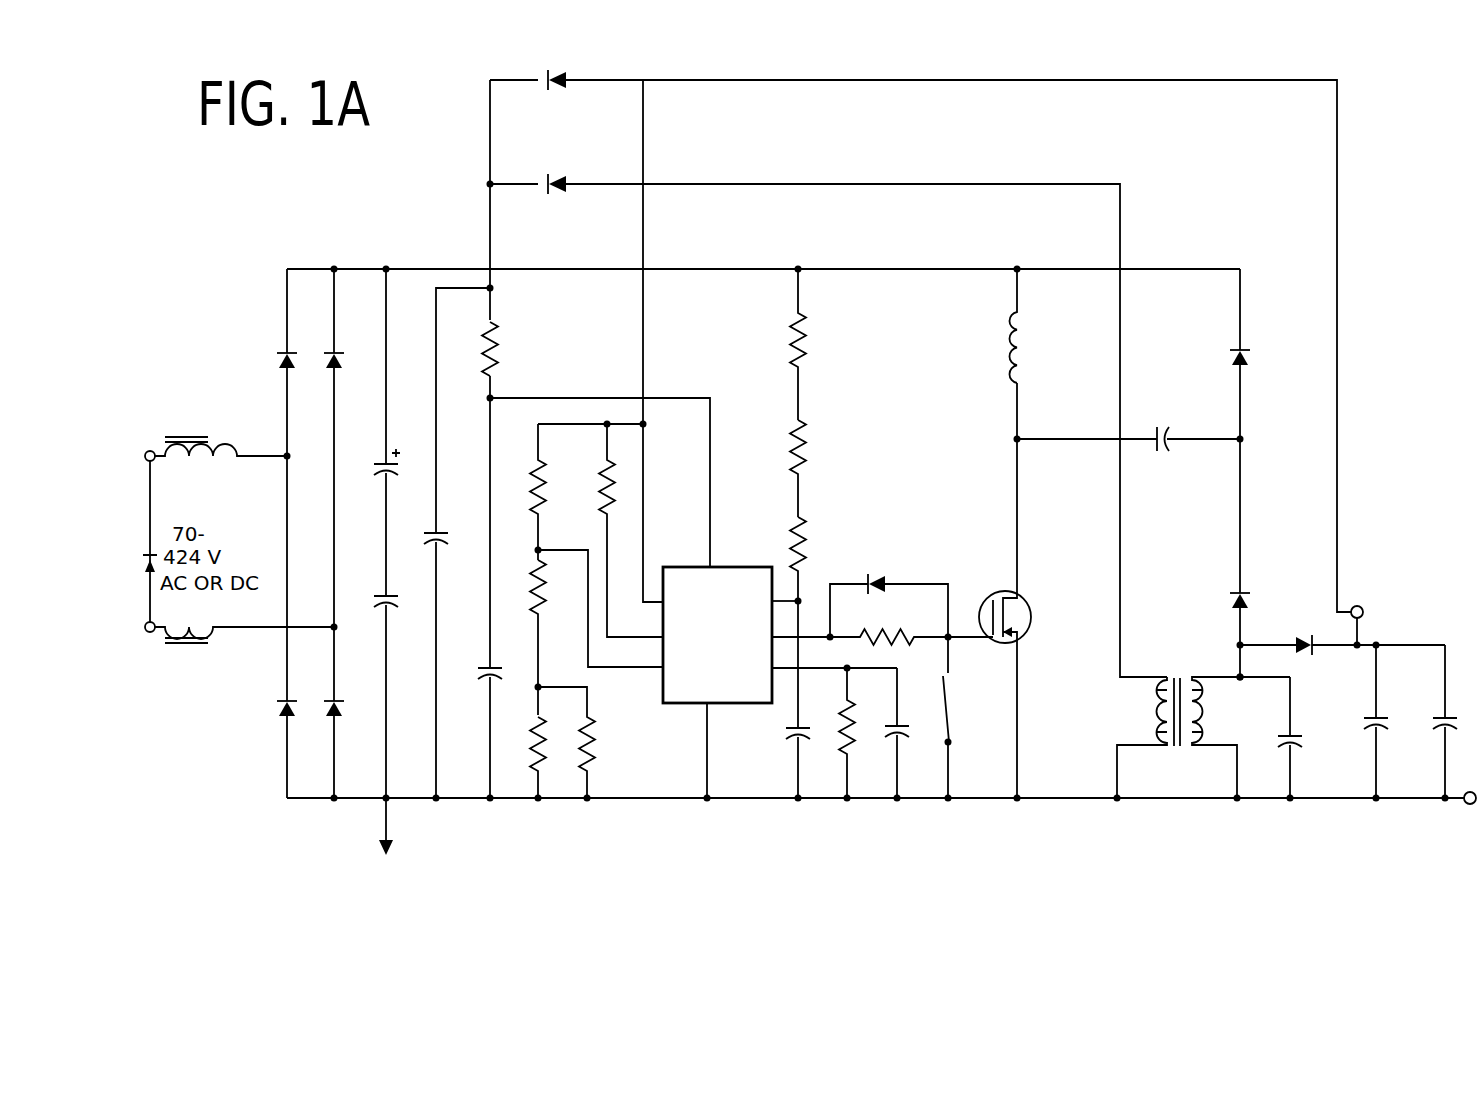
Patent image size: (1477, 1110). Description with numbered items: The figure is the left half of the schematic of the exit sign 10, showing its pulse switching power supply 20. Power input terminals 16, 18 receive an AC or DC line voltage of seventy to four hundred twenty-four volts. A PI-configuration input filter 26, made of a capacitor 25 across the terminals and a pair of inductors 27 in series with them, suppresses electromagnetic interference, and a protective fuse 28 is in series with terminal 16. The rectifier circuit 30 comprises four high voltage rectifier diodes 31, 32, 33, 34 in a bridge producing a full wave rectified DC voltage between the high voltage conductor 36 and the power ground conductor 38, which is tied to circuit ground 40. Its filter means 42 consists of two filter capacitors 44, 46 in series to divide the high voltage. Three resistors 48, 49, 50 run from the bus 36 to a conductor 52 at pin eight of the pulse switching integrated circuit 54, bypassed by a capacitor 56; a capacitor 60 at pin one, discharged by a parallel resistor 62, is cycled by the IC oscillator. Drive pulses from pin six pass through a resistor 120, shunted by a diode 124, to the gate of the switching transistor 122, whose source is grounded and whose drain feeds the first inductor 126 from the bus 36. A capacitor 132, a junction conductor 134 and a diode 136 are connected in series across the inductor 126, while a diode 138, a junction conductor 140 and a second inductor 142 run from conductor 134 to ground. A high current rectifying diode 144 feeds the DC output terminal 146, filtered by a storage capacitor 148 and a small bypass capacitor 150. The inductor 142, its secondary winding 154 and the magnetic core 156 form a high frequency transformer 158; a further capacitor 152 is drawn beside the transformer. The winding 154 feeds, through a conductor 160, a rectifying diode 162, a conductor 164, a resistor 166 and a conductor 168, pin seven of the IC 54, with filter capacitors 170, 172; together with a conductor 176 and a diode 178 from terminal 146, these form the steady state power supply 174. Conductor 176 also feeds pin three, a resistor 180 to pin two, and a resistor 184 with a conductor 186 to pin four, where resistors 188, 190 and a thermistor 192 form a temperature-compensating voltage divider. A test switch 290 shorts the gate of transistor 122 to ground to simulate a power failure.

The exit sign 10 is at (438, 137).
The power input terminal 16 is at (215, 507).
The power input terminal 18 is at (239, 649).
The power supply 20 is at (893, 231).
The capacitor 25 is at (169, 519).
The PI-configuration input filter 26 is at (209, 415).
The inductors 27 is at (212, 542).
The protective fuse 28 is at (228, 484).
The rectifier circuit 30 is at (311, 502).
The rectifier diode 31 is at (259, 368).
The rectifier diode 32 is at (349, 384).
The rectifier diode 33 is at (248, 721).
The rectifier diode 34 is at (347, 735).
The high voltage DC conductor 36 is at (763, 237).
The power ground conductor 38 is at (881, 818).
The power ground 40 is at (414, 825).
The filter means 42 is at (404, 533).
The filter capacitor 44 is at (373, 485).
The filter capacitor 46 is at (371, 579).
The resistor 48 is at (827, 344).
The resistor 49 is at (835, 456).
The resistor 50 is at (824, 611).
The conductor 52 is at (821, 566).
The pulse switching integrated circuit 54 is at (717, 670).
The bypass capacitor 56 is at (776, 765).
The capacitor 60 is at (882, 735).
The resistor 62 is at (834, 733).
The resistor 120 is at (862, 651).
The switching transistor 122 is at (989, 592).
The diode 124 is at (889, 578).
The first inductor 126 is at (1047, 326).
The capacitor 132 is at (1129, 471).
The junction conductor 134 is at (1276, 475).
The diode 136 is at (1273, 337).
The diode 138 is at (1272, 583).
The junction conductor 140 is at (1305, 624).
The second inductor 142 is at (1241, 727).
The high current rectifying diode 144 is at (1323, 666).
The DC output terminal 146 is at (1396, 622).
The storage and filtering capacitor 148 is at (1400, 723).
The capacitor 150 is at (1425, 723).
The capacitor 152 is at (1272, 739).
The secondary winding 154 is at (1124, 727).
The magnetic core 156 is at (1172, 735).
The high frequency transformer 158 is at (1161, 646).
The conductor 160 is at (839, 429).
The rectifying diode 162 is at (585, 204).
The conductor 164 is at (534, 374).
The resistor 166 is at (535, 346).
The conductor 168 is at (627, 456).
The filter capacitor 170 is at (506, 715).
The filter capacitor 172 is at (457, 545).
The steady state power supply 174 is at (1098, 134).
The conductor 176 is at (920, 346).
The diode 178 is at (585, 101).
The resistor 180 is at (600, 529).
The resistor 184 is at (563, 492).
The conductor 186 is at (600, 618).
The resistor 188 is at (559, 637).
The resistor 190 is at (558, 745).
The thermistor 192 is at (607, 744).
The test switch 290 is at (968, 719).